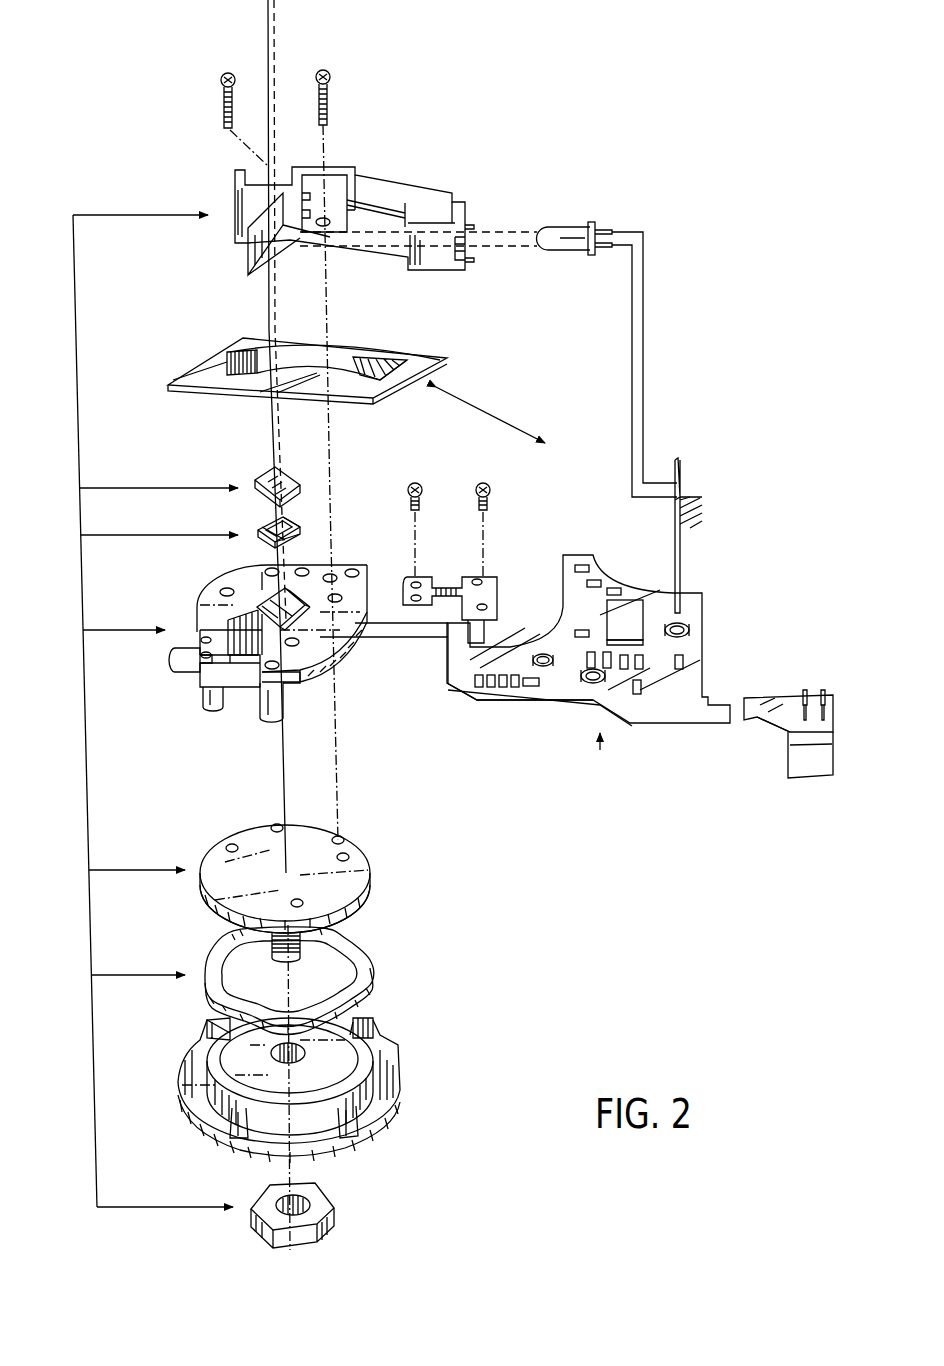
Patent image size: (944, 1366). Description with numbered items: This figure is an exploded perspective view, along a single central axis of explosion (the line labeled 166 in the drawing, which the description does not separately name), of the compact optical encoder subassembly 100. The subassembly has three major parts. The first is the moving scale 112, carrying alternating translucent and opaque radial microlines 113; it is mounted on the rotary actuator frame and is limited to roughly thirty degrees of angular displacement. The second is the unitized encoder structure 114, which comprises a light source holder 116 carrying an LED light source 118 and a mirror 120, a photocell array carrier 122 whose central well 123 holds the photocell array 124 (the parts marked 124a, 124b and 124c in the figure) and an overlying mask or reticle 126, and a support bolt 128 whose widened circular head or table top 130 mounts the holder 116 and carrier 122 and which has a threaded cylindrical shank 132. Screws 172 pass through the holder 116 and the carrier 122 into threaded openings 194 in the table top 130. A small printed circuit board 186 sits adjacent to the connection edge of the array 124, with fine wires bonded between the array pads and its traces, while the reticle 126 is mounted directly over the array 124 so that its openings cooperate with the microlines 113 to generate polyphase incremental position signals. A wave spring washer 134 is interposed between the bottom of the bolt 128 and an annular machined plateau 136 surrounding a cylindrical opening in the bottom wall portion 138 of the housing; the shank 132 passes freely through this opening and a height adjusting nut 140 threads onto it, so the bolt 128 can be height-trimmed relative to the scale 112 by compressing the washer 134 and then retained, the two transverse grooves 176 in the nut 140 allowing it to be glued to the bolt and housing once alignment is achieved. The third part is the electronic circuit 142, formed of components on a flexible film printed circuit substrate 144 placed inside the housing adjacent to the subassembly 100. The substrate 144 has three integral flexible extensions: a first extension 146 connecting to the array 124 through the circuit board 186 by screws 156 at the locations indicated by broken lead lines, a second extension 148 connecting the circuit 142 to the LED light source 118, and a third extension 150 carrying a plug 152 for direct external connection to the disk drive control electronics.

The encoder subassembly 100 is at (624, 971).
The moving scale 112 is at (412, 358).
The radial microlines 113 is at (357, 363).
The unitized encoder structure 114 is at (79, 462).
The light source holder 116 is at (403, 193).
The LED light source 118 is at (563, 228).
The mirror 120 is at (285, 252).
The photocell array carrier 122 is at (198, 600).
The central well 123 is at (300, 615).
The photocell array 124 is at (260, 537).
The sensor element 124a is at (265, 527).
The sensor base 124b is at (290, 533).
The sensor cover 124c is at (293, 520).
The reticle 126 is at (262, 473).
The support bolt 128 is at (203, 890).
The table top 130 is at (220, 863).
The threaded cylindrical shank 132 is at (297, 947).
The wave spring washer 134 is at (372, 962).
The annular machined plateau 136 is at (360, 1050).
The bottom wall portion 138 is at (377, 1130).
The height adjusting nut 140 is at (332, 1215).
The electronic circuit 142 is at (607, 624).
The flexible film printed circuit substrate 144 is at (517, 690).
The first extension 146 is at (493, 597).
The second extension 148 is at (697, 520).
The third extension 150 is at (775, 717).
The plug 152 is at (810, 767).
The screws 156 is at (478, 486).
The shaft 166 is at (270, 22).
The screws 172 is at (221, 80).
The transverse grooves 176 is at (277, 1210).
The small printed circuit board 186 is at (200, 650).
The threaded openings 194 is at (277, 826).